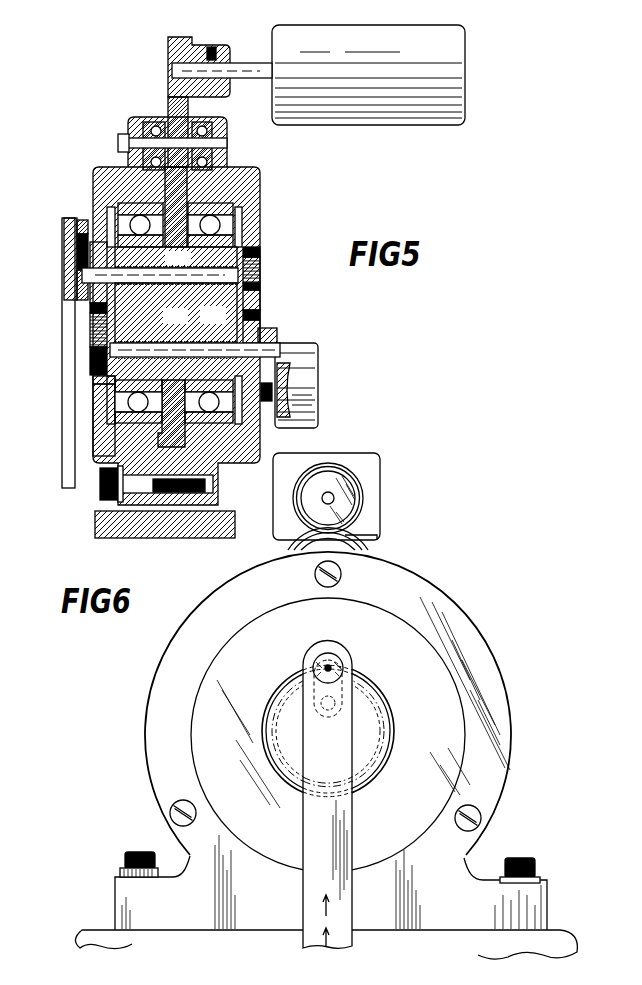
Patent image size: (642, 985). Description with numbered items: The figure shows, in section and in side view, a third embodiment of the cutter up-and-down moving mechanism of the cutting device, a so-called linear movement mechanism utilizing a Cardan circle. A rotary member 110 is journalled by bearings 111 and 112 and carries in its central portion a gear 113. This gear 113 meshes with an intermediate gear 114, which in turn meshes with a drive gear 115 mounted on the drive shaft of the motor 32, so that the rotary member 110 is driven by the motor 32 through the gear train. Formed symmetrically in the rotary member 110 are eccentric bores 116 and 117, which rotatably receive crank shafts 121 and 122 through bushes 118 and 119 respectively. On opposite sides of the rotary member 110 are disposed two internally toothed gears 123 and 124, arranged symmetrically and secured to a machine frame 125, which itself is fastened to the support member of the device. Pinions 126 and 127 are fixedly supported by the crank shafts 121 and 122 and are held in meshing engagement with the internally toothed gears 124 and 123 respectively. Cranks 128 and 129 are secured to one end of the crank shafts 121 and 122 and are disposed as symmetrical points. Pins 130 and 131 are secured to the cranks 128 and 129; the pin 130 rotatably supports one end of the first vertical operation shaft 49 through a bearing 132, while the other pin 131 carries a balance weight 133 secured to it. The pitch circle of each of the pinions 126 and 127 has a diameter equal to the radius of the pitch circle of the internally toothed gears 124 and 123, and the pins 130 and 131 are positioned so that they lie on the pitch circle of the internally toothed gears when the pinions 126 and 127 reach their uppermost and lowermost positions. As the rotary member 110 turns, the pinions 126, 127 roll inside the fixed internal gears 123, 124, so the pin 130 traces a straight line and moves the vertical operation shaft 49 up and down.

In FIG. 5, the motor 32 is at (338, 118).
In FIG. 6, the motor 32 is at (372, 497).
In FIG. 5, the first vertical operation shaft 49 is at (65, 449).
In FIG. 6, the first vertical operation shaft 49 is at (310, 845).
In FIG. 5, the rotary member 110 is at (232, 262).
In FIG. 5, the bearing 111 is at (233, 232).
In FIG. 5, the bearing 112 is at (119, 206).
In FIG. 5, the gear 113 is at (128, 177).
In FIG. 5, the intermediate gear 114 is at (167, 107).
In FIG. 6, the intermediate gear 114 is at (378, 537).
In FIG. 5, the drive gear 115 is at (203, 44).
In FIG. 6, the drive gear 115 is at (348, 491).
In FIG. 5, the eccentric bore 116 is at (260, 285).
In FIG. 5, the eccentric bore 117 is at (164, 313).
In FIG. 5, the bush 118 is at (167, 255).
In FIG. 5, the bush 119 is at (100, 383).
In FIG. 5, the crank shaft 121 is at (78, 288).
In FIG. 5, the crank shaft 122 is at (100, 358).
In FIG. 5, the internally toothed gear 123 is at (258, 305).
In FIG. 5, the internally toothed gear 124 is at (95, 337).
In FIG. 6, the internally toothed gear 124 is at (390, 737).
In FIG. 5, the machine frame 125 is at (103, 523).
In FIG. 6, the machine frame 125 is at (448, 940).
In FIG. 5, the pinion 126 is at (95, 308).
In FIG. 6, the pinion 126 is at (358, 698).
In FIG. 5, the pinion 127 is at (233, 331).
In FIG. 5, the crank 128 is at (83, 221).
In FIG. 6, the crank 128 is at (312, 690).
In FIG. 5, the crank 129 is at (268, 333).
In FIG. 5, the pin 130 is at (83, 252).
In FIG. 6, the pin 130 is at (331, 668).
In FIG. 5, the pin 131 is at (310, 393).
In FIG. 5, the bearing 132 is at (83, 238).
In FIG. 5, the balance weight 133 is at (310, 372).